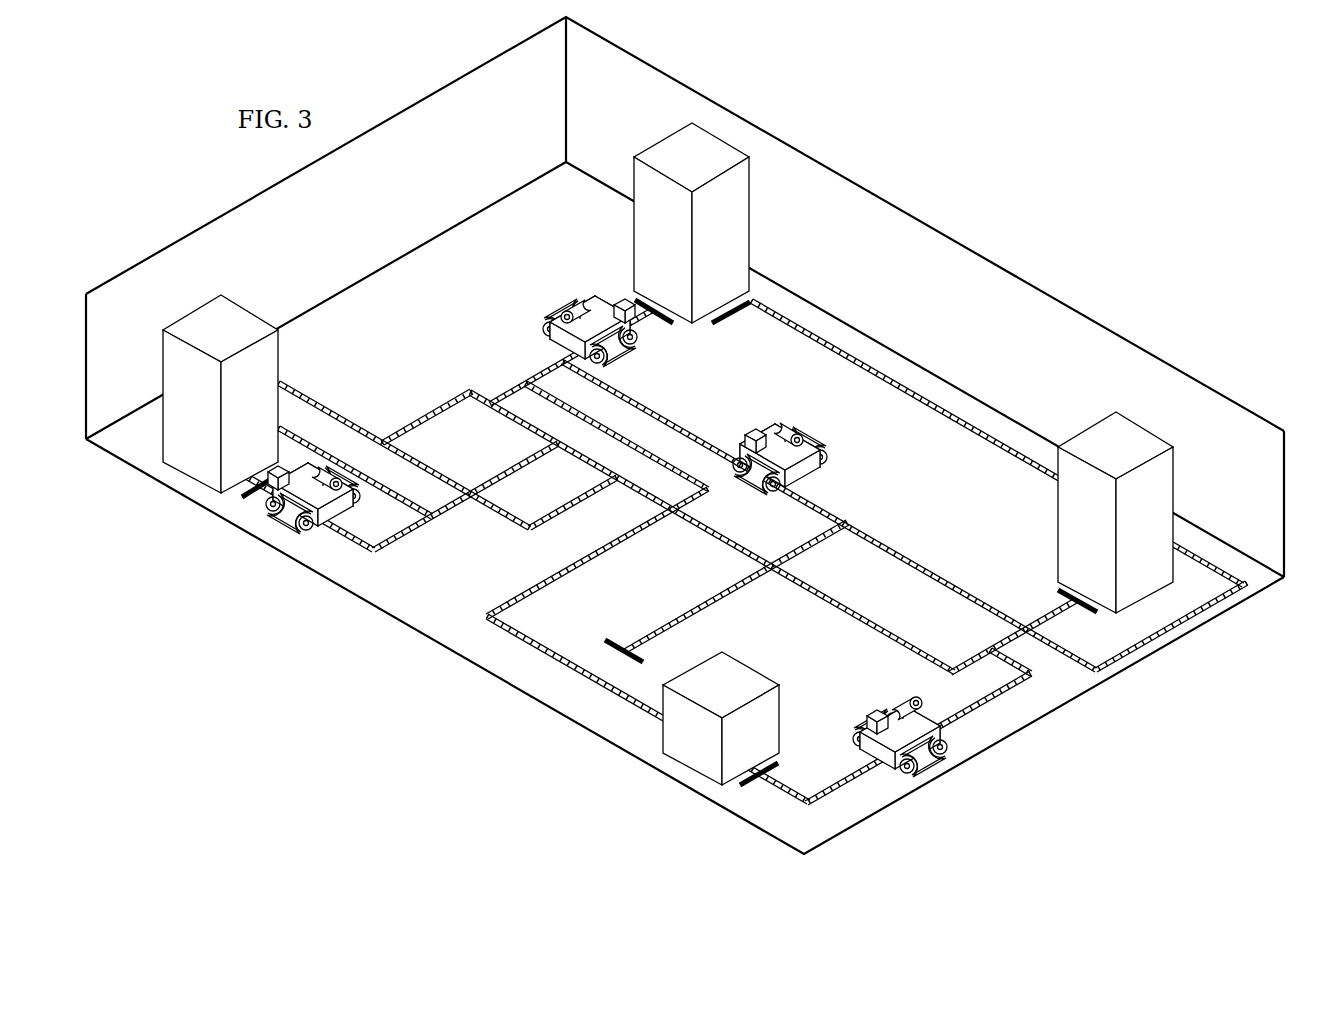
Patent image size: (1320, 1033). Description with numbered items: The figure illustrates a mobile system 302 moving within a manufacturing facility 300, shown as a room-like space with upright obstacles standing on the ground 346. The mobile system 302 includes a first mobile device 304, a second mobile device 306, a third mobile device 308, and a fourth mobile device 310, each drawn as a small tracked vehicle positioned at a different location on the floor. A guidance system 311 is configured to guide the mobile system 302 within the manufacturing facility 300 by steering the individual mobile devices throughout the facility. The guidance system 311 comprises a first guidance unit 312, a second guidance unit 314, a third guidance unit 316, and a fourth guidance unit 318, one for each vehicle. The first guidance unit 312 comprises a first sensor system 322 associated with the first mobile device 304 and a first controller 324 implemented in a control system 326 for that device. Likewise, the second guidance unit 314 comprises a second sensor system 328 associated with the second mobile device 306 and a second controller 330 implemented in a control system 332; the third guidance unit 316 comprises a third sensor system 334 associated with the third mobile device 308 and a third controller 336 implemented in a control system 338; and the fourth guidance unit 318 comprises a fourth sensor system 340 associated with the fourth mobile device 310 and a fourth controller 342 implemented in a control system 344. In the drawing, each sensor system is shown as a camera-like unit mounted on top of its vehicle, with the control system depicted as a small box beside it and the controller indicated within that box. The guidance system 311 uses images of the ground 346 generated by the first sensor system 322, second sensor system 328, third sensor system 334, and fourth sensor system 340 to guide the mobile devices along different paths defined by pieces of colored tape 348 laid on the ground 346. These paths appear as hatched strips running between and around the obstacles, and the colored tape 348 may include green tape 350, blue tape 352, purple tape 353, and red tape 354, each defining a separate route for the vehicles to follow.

The manufacturing facility 300 is at (1066, 162).
The mobile system 302 is at (911, 696).
The first mobile device 304 is at (862, 783).
The second mobile device 306 is at (800, 423).
The third mobile device 308 is at (541, 282).
The fourth mobile device 310 is at (349, 474).
The guidance system 311 is at (838, 440).
The first guidance unit 312 is at (900, 695).
The second guidance unit 314 is at (790, 430).
The third guidance unit 316 is at (557, 300).
The fourth guidance unit 318 is at (350, 481).
The first sensor system 322 is at (912, 698).
The first controller 324 is at (880, 712).
The control system 326 is at (868, 722).
The second sensor system 328 is at (770, 428).
The second controller 330 is at (770, 440).
The control system 332 is at (802, 420).
The third sensor system 334 is at (575, 296).
The third controller 336 is at (612, 268).
The control system 338 is at (618, 296).
The fourth sensor system 340 is at (345, 470).
The fourth controller 342 is at (327, 470).
The control system 344 is at (290, 462).
The ground 346 is at (960, 475).
The colored tape 348 is at (937, 566).
The green tape 350 is at (424, 530).
The blue tape 352 is at (730, 540).
The purple tape 353 is at (540, 652).
The red tape 354 is at (760, 312).